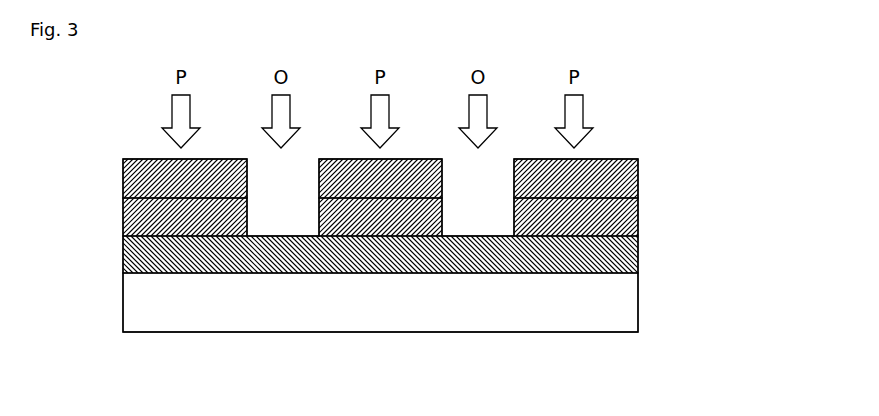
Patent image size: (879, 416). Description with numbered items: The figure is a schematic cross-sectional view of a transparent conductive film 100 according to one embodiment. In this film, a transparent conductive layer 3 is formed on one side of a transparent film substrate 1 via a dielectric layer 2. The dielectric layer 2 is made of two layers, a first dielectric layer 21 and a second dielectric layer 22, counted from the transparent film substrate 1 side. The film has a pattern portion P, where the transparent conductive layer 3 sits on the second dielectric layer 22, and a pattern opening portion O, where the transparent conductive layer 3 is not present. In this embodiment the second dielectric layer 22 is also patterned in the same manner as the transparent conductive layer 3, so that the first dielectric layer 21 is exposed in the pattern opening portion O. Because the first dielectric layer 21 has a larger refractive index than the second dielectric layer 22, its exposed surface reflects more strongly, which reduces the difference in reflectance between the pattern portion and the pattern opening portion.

The transparent conductive film 100 is at (620, 151).
The transparent film substrate 1 is at (623, 294).
The dielectric layer 2 is at (417, 218).
The first dielectric layer 21 is at (625, 247).
The second dielectric layer 22 is at (625, 212).
The transparent conductive layer 3 is at (628, 174).